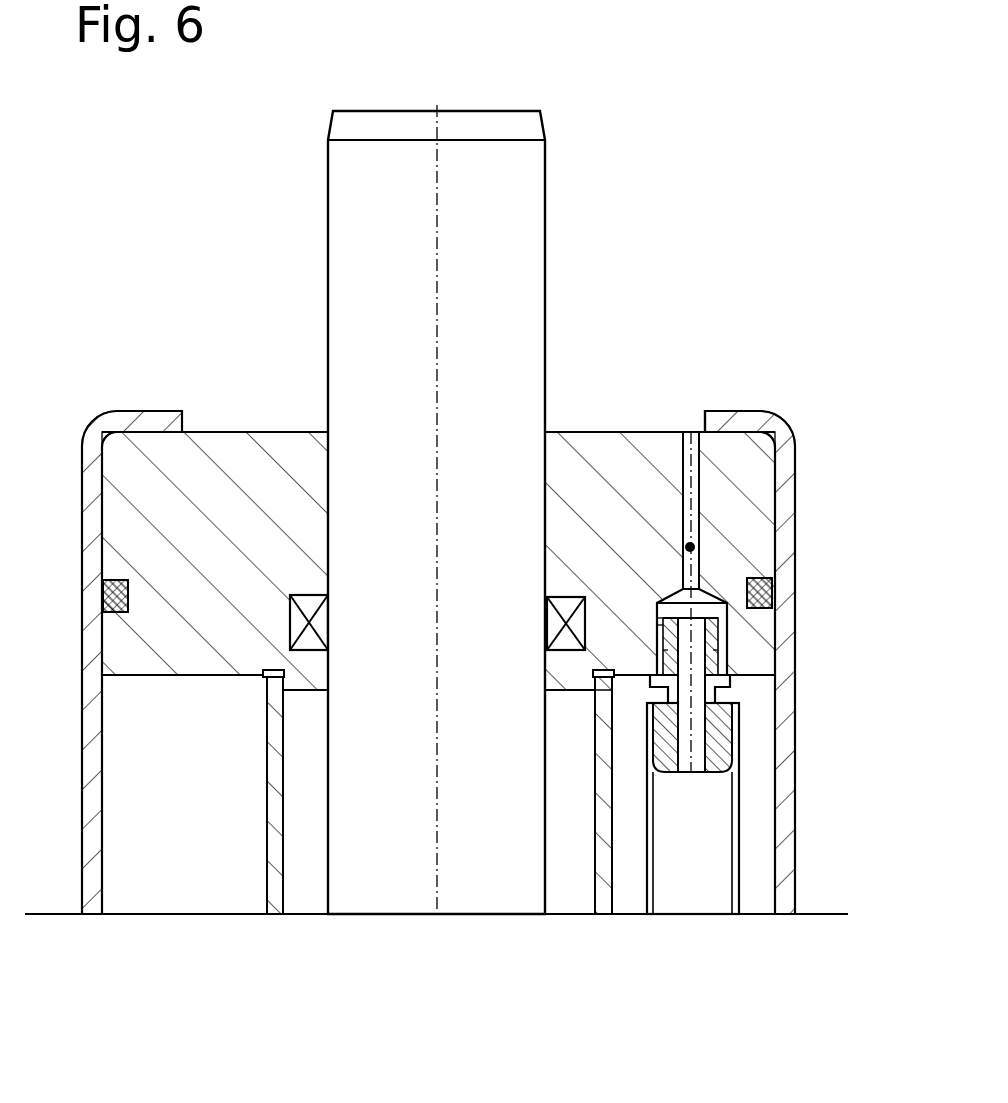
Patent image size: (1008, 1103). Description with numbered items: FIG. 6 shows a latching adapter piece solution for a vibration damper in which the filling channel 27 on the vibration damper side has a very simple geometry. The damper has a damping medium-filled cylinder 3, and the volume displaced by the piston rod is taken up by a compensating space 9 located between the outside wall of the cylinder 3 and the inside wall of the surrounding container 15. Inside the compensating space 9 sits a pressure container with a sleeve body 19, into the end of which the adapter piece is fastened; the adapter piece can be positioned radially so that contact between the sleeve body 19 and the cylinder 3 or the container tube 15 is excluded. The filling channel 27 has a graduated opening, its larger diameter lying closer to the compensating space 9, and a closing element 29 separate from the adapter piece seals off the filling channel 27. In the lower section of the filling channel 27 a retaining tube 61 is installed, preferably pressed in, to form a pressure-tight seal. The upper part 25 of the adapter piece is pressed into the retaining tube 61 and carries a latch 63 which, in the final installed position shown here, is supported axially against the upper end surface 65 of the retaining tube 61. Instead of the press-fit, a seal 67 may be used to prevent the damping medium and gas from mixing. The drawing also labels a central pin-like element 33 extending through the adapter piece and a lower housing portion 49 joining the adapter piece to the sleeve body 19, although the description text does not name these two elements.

The cylinder 3 is at (278, 893).
The compensating space 9 is at (748, 883).
The container 15 is at (93, 762).
The sleeve body 19 is at (695, 885).
The upper part 25 is at (715, 663).
The filling channel 27 is at (723, 410).
The closing element 29 is at (686, 535).
The valve pin 33 is at (720, 718).
The valve housing 49 is at (750, 863).
The retaining tube 61 is at (674, 562).
The latch 63 is at (657, 603).
The upper end surface 65 is at (660, 622).
The seal 67 is at (728, 685).